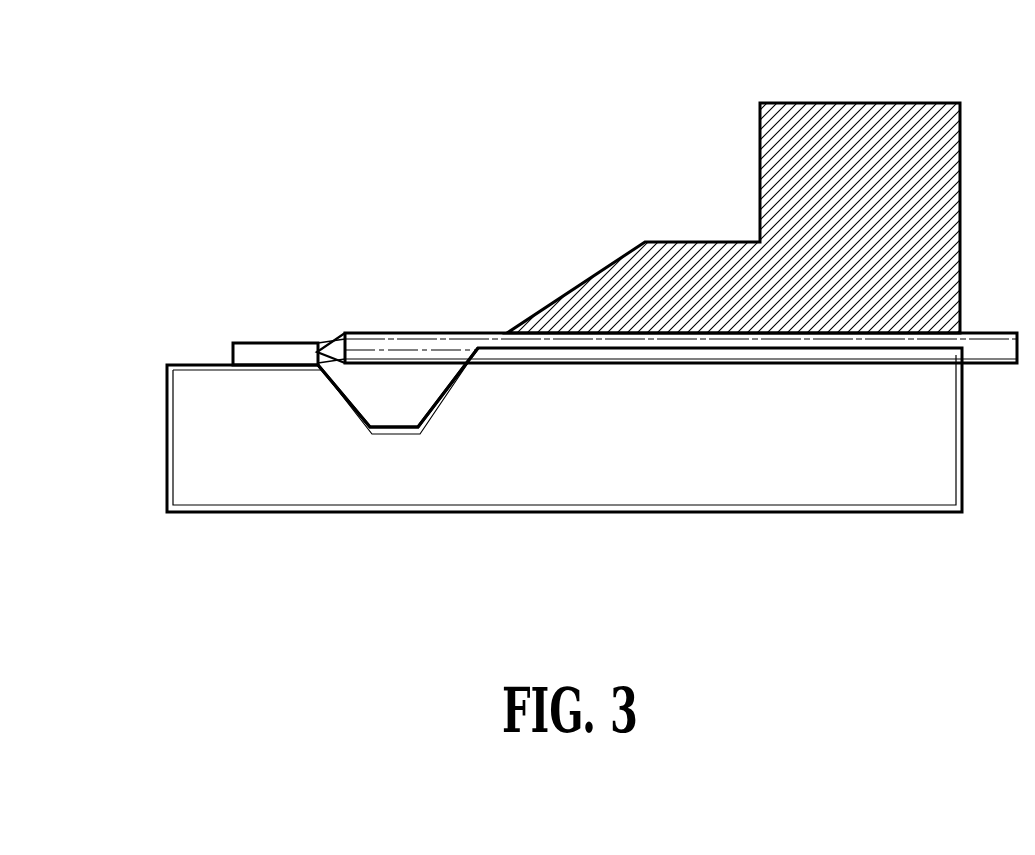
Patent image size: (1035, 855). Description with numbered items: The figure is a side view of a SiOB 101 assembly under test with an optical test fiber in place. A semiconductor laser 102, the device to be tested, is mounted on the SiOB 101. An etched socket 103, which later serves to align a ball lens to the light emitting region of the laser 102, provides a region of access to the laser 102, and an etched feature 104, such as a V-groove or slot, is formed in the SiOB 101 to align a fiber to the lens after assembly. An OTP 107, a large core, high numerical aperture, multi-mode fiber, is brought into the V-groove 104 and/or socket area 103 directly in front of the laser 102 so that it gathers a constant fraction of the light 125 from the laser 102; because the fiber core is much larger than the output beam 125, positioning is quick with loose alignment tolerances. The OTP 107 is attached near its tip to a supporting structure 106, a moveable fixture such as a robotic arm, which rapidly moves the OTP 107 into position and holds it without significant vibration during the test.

The SiOB 101 is at (503, 430).
The laser 102 is at (268, 375).
The etched socket 103 is at (423, 400).
The etched feature 104 is at (569, 372).
The supporting structure 106 is at (817, 292).
The OTP 107 is at (405, 327).
The light 125 is at (335, 366).